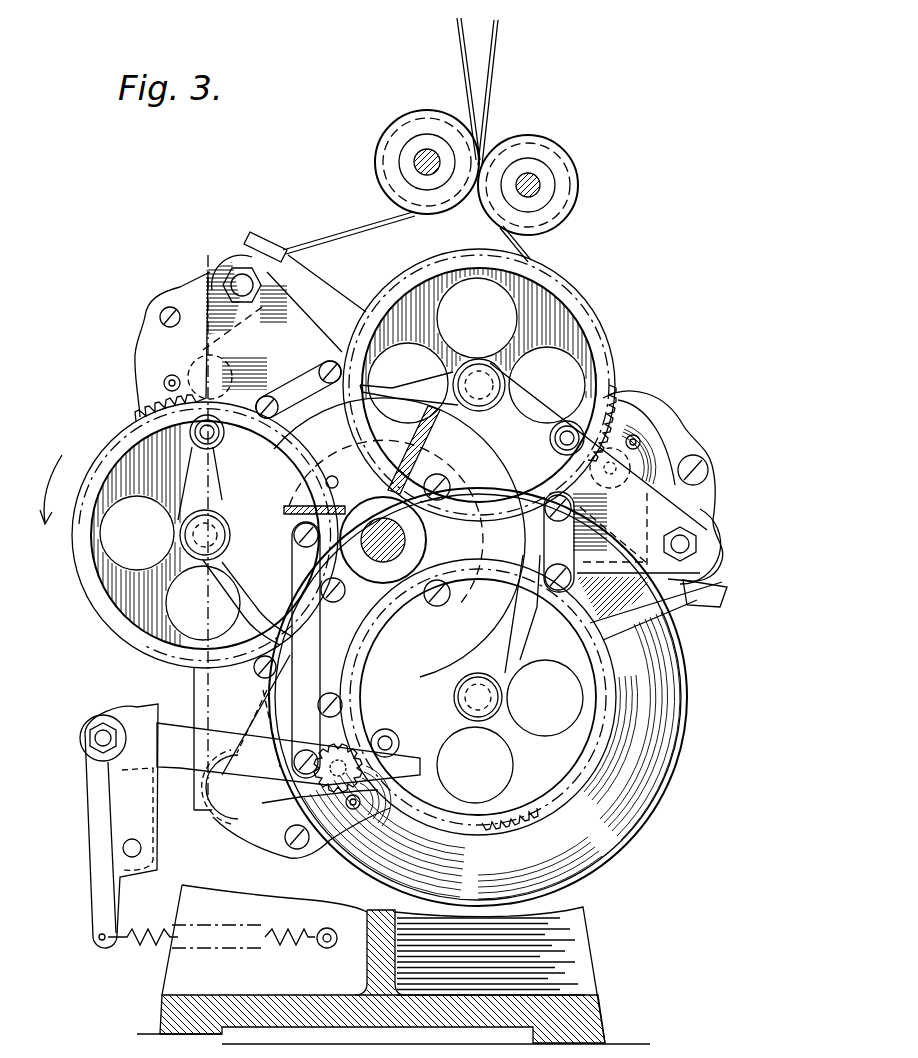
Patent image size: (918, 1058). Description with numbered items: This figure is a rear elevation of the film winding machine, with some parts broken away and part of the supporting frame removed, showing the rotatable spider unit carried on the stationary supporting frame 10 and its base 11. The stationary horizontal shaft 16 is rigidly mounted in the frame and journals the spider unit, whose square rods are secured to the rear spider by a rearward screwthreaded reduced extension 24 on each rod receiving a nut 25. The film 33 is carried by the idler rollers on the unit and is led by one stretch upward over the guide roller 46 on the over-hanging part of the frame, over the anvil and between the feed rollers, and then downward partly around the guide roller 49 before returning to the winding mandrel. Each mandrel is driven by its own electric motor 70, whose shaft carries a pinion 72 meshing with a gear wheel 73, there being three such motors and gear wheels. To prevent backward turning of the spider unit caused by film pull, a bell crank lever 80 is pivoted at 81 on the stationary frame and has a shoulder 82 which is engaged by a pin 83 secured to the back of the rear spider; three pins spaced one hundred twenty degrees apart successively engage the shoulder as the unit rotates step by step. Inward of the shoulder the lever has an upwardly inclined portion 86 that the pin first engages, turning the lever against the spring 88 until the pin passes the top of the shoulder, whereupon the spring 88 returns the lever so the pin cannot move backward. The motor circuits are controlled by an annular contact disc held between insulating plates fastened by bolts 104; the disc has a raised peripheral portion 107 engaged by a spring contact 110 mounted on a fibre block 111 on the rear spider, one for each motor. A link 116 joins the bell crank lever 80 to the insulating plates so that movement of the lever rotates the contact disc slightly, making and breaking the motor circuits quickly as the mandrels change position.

The supporting frame 10 is at (588, 931).
The base 11 is at (592, 1014).
The stationary horizontal shaft 16 is at (408, 540).
The rearward screwthreaded reduced extension 24 is at (228, 276).
The nut 25 is at (240, 268).
The film 33 is at (313, 232).
The guide roller 46 is at (580, 194).
The guide roller 49 is at (393, 135).
The electric motor 70 is at (172, 378).
The pinion 72 is at (200, 362).
The gear wheel 73 is at (495, 828).
The bell crank lever 80 is at (88, 858).
The pivot 81 is at (92, 742).
The shoulder 82 is at (408, 776).
The pin 83 is at (568, 422).
The upwardly inclined portion 86 is at (352, 755).
The spring 88 is at (165, 940).
The bolts 104 is at (438, 622).
The raised peripheral portion 107 is at (250, 463).
The spring contact 110 is at (393, 385).
The fibre block 111 is at (262, 380).
The link 116 is at (334, 594).